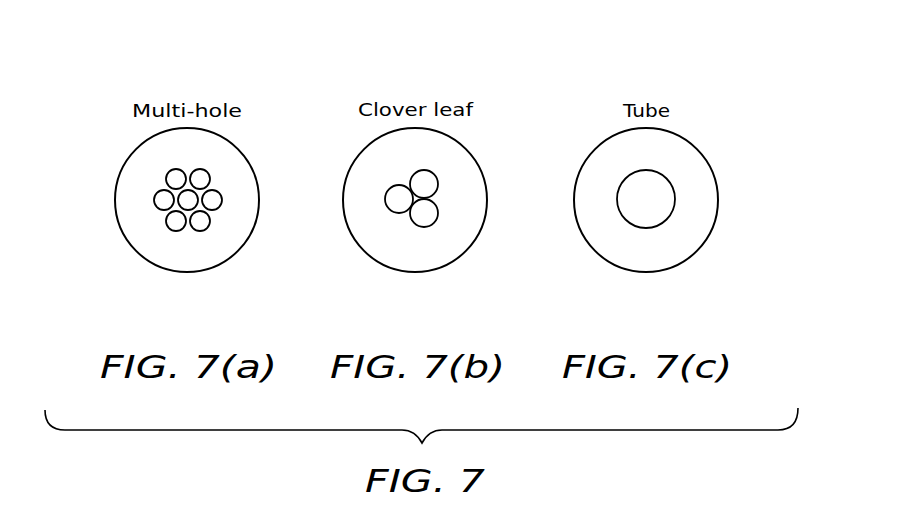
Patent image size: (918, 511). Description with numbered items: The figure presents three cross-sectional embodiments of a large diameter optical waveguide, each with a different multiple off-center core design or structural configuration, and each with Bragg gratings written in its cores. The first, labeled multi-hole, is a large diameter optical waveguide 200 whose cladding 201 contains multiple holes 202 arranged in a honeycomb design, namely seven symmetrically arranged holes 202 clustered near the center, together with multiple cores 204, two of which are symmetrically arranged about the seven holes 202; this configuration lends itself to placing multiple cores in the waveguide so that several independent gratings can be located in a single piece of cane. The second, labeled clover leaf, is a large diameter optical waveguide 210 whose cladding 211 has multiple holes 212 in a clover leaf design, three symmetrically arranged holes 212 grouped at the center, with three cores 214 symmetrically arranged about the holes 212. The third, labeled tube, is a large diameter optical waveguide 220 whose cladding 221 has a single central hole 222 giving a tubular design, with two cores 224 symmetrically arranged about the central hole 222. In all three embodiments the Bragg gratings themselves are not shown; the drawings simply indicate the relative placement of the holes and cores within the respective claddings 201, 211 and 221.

In FIG. 7a, the large diameter optical waveguide 200 is at (107, 113).
In FIG. 7a, the cladding 201 is at (138, 223).
In FIG. 7a, the holes 202 is at (172, 177).
In FIG. 7a, the cores 204 is at (210, 187).
In FIG. 7b, the large diameter optical waveguide 210 is at (355, 73).
In FIG. 7b, the cladding 211 is at (457, 153).
In FIG. 7b, the holes 212 is at (398, 200).
In FIG. 7b, the cores 214 is at (405, 178).
In FIG. 7c, the large diameter optical waveguide 220 is at (725, 112).
In FIG. 7c, the cladding 221 is at (705, 198).
In FIG. 7c, the central hole 222 is at (657, 208).
In FIG. 7c, the cores 224 is at (668, 182).